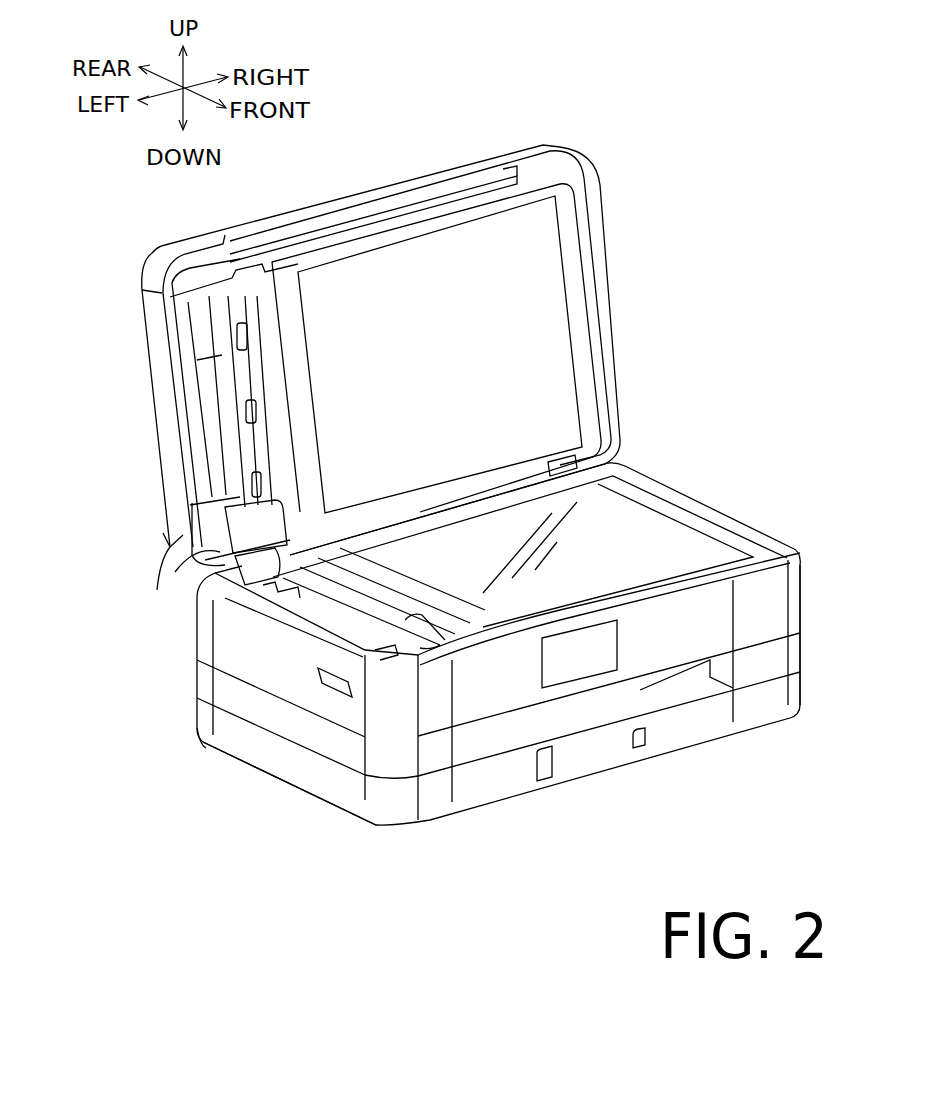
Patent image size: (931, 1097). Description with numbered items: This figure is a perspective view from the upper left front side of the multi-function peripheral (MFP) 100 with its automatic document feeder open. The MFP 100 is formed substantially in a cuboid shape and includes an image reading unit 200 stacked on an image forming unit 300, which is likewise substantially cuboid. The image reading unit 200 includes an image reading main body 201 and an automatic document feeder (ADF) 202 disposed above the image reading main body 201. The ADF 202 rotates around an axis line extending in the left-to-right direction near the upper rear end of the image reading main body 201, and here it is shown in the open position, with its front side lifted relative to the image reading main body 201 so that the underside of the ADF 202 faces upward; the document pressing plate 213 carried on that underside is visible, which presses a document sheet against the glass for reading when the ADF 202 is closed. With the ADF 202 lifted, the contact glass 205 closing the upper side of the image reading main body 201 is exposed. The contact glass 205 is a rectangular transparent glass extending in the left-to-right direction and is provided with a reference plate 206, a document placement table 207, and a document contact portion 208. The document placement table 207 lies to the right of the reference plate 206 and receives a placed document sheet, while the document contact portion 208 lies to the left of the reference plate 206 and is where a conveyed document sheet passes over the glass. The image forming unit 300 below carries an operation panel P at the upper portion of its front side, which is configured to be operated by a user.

The multi-function peripheral 100 is at (536, 882).
The image reading unit 200 is at (94, 585).
The image reading main body 201 is at (225, 628).
The automatic document feeder 202 is at (165, 555).
The contact glass 205 is at (670, 537).
The reference plate 206 is at (417, 600).
The document placement table 207 is at (528, 600).
The document contact portion 208 is at (422, 616).
The document pressing plate 213 is at (543, 300).
The image forming unit 300 is at (313, 768).
The operation panel P is at (665, 655).